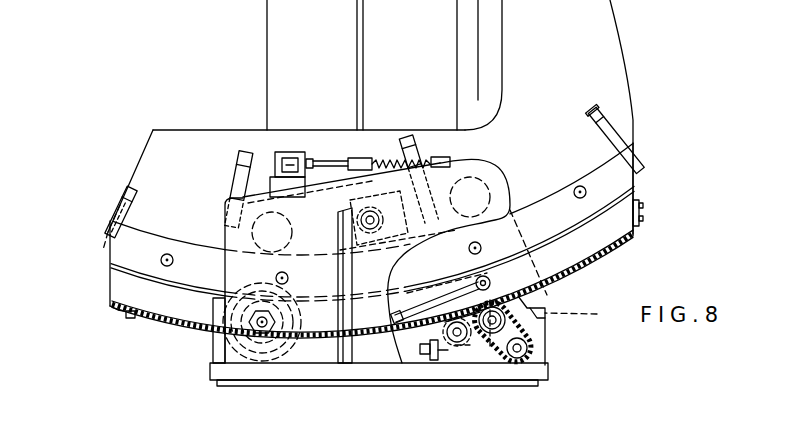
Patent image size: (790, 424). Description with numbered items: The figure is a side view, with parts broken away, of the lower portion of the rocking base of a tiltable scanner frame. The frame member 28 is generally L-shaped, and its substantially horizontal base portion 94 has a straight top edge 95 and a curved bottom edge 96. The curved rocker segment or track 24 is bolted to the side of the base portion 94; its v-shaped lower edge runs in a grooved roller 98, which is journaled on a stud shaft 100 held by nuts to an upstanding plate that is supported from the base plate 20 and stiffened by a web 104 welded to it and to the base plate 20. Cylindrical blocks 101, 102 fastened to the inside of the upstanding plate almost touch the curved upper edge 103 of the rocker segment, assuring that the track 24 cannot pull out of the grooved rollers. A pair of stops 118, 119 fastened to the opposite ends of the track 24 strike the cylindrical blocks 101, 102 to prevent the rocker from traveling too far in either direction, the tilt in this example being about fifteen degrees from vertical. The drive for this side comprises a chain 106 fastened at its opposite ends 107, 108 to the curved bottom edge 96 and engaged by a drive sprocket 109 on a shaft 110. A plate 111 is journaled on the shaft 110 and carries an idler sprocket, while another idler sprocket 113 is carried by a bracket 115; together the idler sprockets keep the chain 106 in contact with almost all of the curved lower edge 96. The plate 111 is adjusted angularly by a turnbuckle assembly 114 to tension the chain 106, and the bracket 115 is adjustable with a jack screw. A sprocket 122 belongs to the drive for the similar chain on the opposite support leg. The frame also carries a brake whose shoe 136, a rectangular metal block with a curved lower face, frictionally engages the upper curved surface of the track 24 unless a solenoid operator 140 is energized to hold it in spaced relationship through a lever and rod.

The base plate 20 is at (547, 370).
The curved rocker segment or track 24 is at (128, 254).
The L-shaped frame member 28 is at (567, 54).
The base portion 94 is at (124, 290).
The straight top edge 95 is at (189, 129).
The curved bottom edge 96 is at (117, 310).
The grooved roller 98 is at (269, 352).
The stud shaft 100 is at (258, 323).
The cylindrical block 101 is at (491, 166).
The cylindrical block 102 is at (226, 212).
The curved upper edge 103 is at (151, 220).
The web 104 is at (347, 353).
The chain 106 is at (173, 330).
The chain end 107 is at (133, 320).
The chain end 108 is at (639, 212).
The drive sprocket 109 is at (517, 356).
The shaft 110 is at (533, 348).
The plate 111 is at (581, 313).
The idler sprocket 113 is at (457, 353).
The turnbuckle assembly 114 is at (438, 285).
The bracket 115 is at (468, 353).
The stop 118 is at (116, 202).
The stop 119 is at (633, 113).
The sprocket 122 is at (548, 296).
The brake shoe 136 is at (366, 151).
The solenoid operator 140 is at (55, 415).